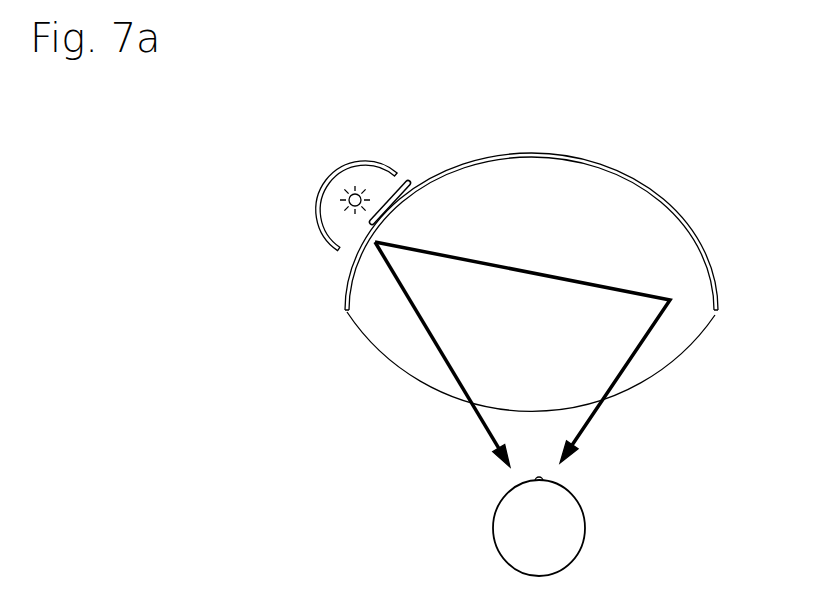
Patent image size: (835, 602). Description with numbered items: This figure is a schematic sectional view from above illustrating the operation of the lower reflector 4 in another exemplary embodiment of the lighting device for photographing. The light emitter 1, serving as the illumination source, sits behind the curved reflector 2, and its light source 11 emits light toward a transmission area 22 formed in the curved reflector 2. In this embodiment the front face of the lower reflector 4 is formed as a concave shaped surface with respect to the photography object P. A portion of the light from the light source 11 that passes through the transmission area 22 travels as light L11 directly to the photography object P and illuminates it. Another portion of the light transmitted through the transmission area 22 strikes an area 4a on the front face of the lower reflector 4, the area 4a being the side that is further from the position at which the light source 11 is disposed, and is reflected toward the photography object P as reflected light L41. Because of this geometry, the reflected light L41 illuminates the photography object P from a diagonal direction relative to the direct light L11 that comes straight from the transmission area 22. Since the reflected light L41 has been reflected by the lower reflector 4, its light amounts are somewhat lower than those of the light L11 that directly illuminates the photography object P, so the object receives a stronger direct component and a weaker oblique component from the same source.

The light emitter 1 is at (318, 178).
The light source 11 is at (338, 201).
The curved reflector 2 is at (657, 189).
The transmission area 22 is at (375, 264).
The lower reflector 4 is at (637, 387).
The area 4a is at (678, 277).
The light L11 is at (443, 358).
The reflected light L41 is at (650, 333).
The photography object P is at (482, 528).